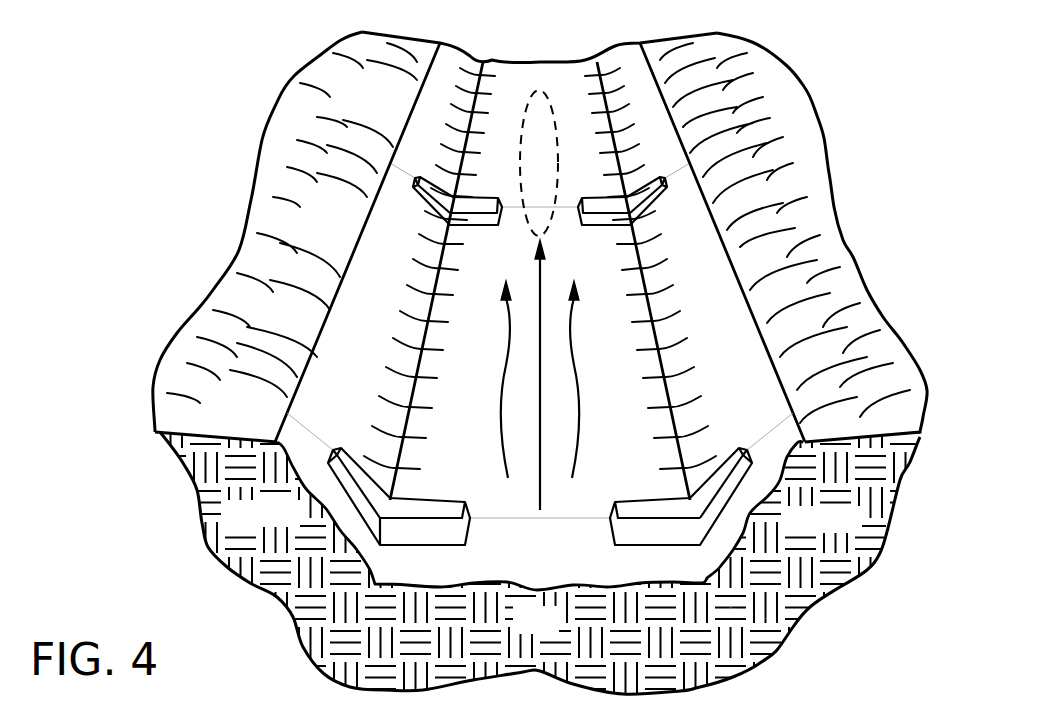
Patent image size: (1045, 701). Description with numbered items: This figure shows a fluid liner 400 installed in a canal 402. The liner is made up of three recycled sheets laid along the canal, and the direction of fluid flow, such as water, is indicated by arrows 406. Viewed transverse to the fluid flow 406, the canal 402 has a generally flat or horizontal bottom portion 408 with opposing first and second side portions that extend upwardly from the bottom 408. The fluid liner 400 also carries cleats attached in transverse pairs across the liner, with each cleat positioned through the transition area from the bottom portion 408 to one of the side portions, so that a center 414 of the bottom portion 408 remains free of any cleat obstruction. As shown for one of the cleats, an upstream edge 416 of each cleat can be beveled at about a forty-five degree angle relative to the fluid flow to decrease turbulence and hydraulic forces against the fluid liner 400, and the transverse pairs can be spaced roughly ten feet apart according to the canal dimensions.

The fluid liner 400 is at (624, 63).
The canal 402 is at (113, 308).
The arrows indicating fluid flow 406 is at (560, 361).
The bottom portion 408 is at (555, 632).
The center of bottom portion 414 is at (537, 107).
The upstream edge 416 is at (410, 537).